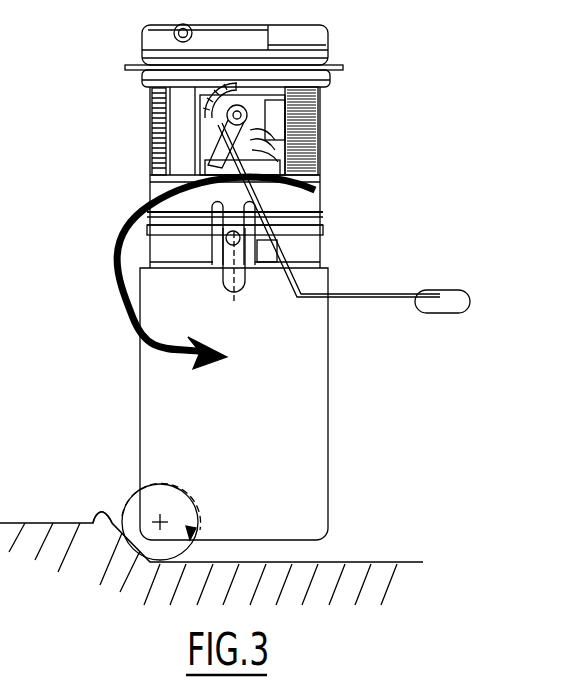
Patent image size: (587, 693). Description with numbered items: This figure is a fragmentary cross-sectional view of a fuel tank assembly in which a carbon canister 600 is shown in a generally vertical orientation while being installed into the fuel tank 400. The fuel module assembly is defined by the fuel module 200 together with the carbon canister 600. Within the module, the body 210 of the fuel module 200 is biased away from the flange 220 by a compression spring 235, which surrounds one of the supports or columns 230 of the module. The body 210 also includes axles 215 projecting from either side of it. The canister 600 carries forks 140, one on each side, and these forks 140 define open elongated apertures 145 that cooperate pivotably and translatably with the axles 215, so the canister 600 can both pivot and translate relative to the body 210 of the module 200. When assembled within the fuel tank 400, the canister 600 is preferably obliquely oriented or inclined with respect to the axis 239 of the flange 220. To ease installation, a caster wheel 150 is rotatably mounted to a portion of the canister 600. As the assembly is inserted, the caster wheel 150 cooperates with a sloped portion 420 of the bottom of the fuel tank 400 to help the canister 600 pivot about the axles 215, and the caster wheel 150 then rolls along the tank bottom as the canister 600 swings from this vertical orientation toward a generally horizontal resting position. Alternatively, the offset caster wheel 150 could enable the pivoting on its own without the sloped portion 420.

The fuel module 200 is at (340, 157).
The flange 220 is at (315, 43).
The support or column 230 is at (152, 130).
The compression spring 235 is at (320, 105).
The body 210 is at (322, 207).
The open elongated apertures 145 is at (200, 213).
The forks 140 is at (252, 232).
The axles 215 is at (232, 243).
The axis 239 is at (237, 298).
The carbon canister 600 is at (300, 432).
The caster wheel 150 is at (127, 516).
The fuel tank 400 is at (408, 581).
The sloped portion 420 is at (103, 526).